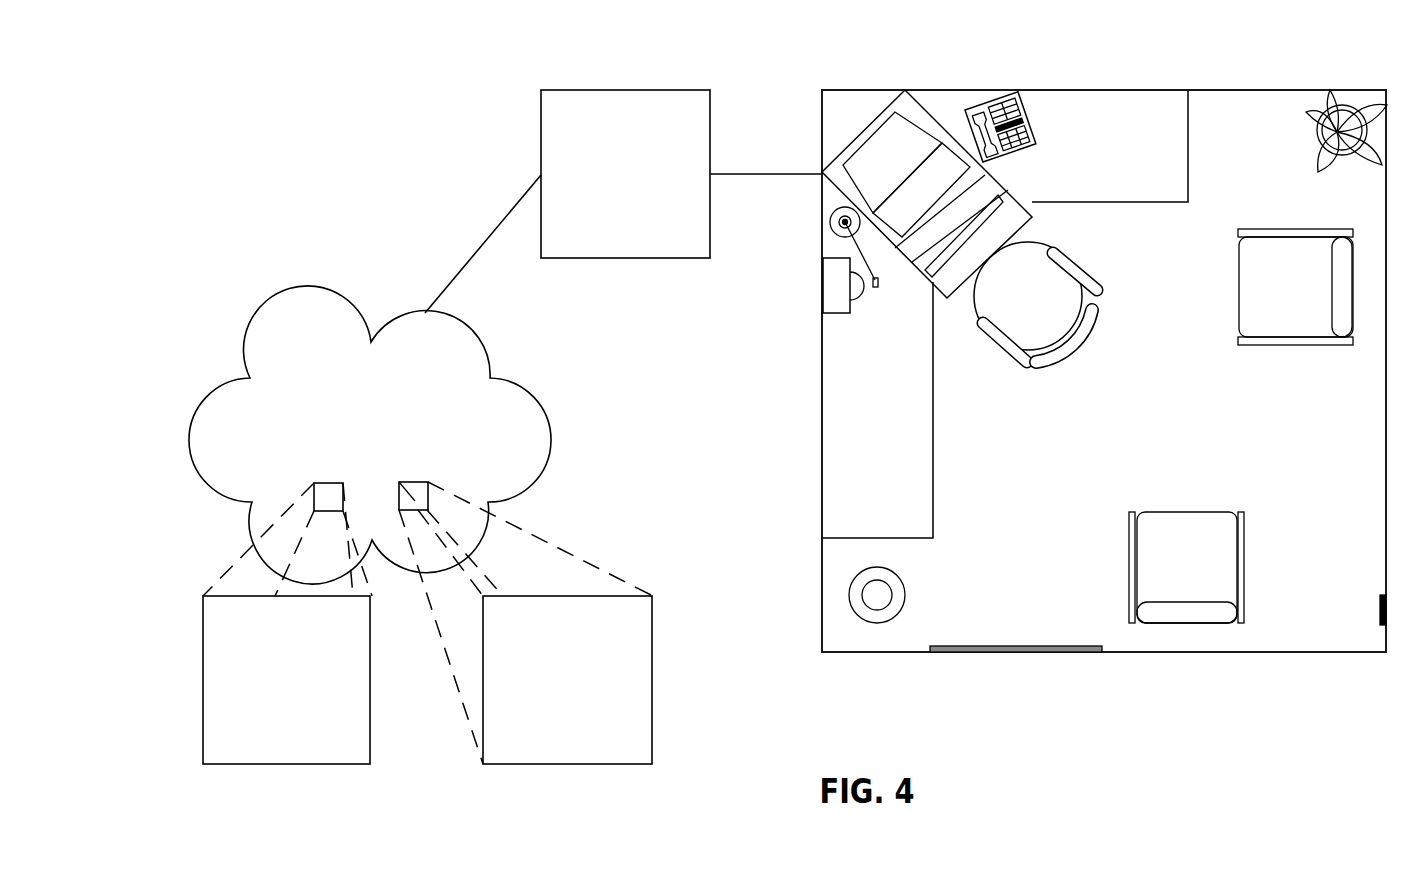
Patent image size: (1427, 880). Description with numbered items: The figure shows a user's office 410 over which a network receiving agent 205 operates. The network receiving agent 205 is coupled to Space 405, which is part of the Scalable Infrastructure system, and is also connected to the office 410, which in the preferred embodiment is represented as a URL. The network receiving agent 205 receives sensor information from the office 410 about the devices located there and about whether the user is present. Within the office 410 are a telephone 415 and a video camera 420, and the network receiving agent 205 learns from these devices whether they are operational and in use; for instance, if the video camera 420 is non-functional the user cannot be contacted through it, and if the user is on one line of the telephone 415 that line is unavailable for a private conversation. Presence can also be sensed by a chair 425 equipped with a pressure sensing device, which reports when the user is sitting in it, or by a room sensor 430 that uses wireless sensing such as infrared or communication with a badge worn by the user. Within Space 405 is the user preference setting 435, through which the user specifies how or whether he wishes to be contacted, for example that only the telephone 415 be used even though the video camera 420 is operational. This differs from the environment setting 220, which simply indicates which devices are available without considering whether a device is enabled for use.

The network receiving agent 205 is at (587, 90).
The Space 405 is at (253, 378).
The office 410 is at (851, 90).
The telephone 415 is at (1037, 130).
The video camera 420 is at (830, 315).
The chair 425 is at (1073, 348).
The room sensor 430 is at (1380, 608).
The user preference setting 435 is at (202, 678).
The environment setting 220 is at (652, 678).